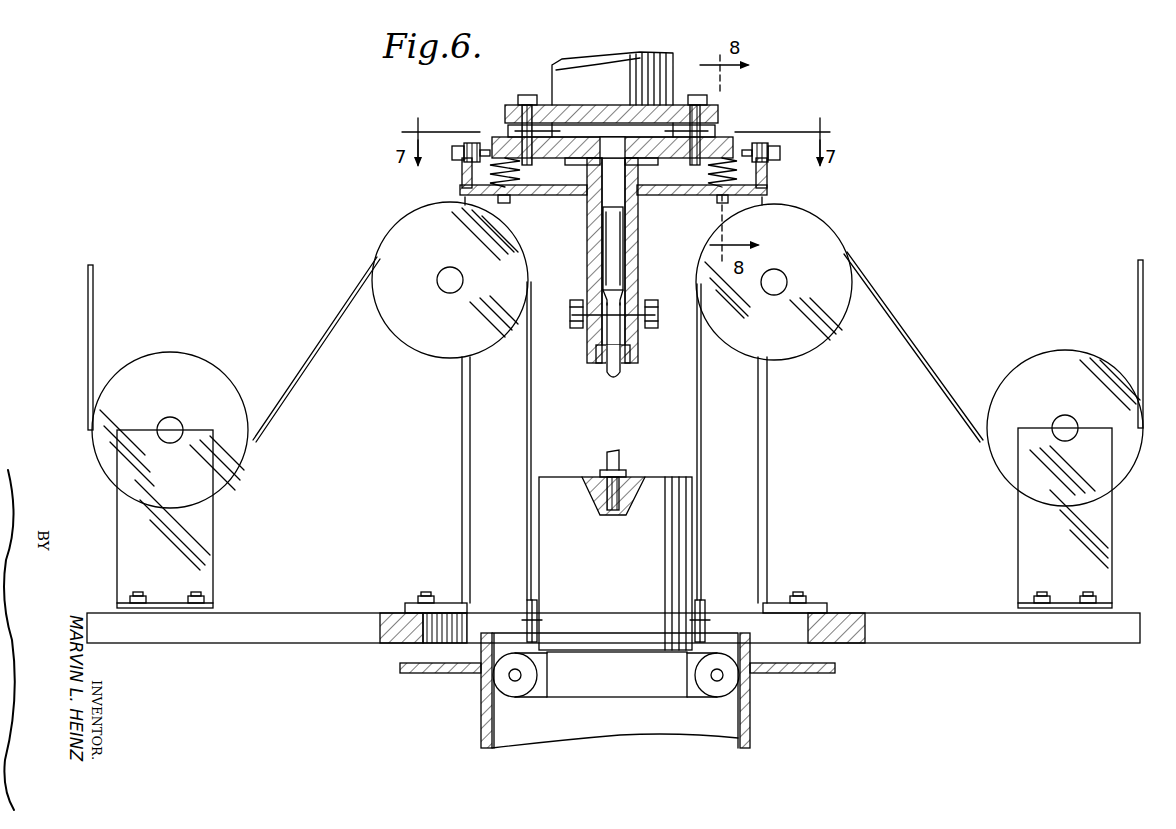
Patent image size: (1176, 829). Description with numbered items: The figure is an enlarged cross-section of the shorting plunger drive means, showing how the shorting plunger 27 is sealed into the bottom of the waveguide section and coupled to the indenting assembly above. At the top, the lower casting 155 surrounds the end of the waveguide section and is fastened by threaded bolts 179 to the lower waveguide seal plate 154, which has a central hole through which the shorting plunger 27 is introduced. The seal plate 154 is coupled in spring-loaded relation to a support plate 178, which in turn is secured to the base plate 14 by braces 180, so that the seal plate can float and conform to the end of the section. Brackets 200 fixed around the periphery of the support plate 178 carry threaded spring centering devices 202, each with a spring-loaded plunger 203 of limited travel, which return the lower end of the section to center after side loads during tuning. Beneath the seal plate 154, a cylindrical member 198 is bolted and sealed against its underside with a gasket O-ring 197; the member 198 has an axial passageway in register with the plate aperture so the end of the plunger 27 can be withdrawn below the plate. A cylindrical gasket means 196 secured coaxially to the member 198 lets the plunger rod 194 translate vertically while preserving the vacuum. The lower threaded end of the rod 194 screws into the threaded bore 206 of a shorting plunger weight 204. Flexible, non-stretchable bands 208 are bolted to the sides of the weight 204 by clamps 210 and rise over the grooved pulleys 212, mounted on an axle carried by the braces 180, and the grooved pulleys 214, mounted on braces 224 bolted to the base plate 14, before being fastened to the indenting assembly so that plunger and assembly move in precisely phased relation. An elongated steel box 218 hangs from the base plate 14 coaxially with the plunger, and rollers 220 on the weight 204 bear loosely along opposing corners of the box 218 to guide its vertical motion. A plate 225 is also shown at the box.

The base plate 14 is at (890, 612).
The shorting plunger 27 is at (611, 228).
The lower waveguide seal plate 154 is at (718, 140).
The casting 155 is at (505, 114).
The support plate 178 is at (706, 186).
The threaded bolts 179 is at (508, 131).
The braces 180 is at (460, 490).
The plunger rod 194 is at (622, 300).
The cylindrical gasket means 196 is at (596, 343).
The gasket O-ring 197 is at (590, 306).
The cylindrical member 198 is at (646, 254).
The brackets 200 is at (478, 165).
The spring centering devices 202 is at (443, 140).
The plunger 203 is at (462, 196).
The shorting plunger weight 204 is at (692, 500).
The threaded bore 206 is at (600, 515).
The flexible, non-stretchable bands 208 is at (524, 458).
The clamps 210 is at (526, 612).
The grooved pulleys 212 is at (430, 352).
The grooved pulleys 214 is at (225, 478).
The elongated steel box 218 is at (750, 735).
The rollers 220 is at (722, 697).
The braces 224 is at (213, 528).
The plate 225 is at (496, 735).